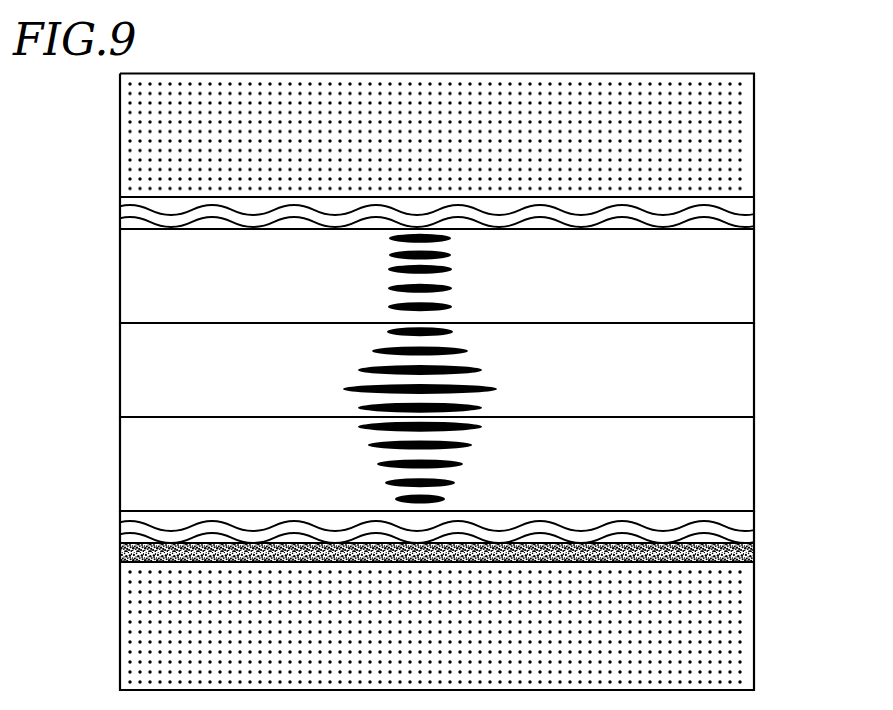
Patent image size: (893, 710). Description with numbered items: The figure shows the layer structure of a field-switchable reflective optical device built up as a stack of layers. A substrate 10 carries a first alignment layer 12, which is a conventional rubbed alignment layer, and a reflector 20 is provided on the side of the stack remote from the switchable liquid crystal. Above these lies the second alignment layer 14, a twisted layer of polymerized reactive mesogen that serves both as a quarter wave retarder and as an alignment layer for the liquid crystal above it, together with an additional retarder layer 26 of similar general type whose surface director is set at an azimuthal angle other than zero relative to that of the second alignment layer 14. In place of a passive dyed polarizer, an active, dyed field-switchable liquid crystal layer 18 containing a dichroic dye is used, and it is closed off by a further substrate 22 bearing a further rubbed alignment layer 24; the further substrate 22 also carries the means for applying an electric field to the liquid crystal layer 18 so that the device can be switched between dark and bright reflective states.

The substrate 10 is at (728, 625).
The first alignment layer 12 is at (737, 529).
The second alignment layer 14 is at (718, 390).
The field-switchable liquid crystal layer 18 is at (707, 293).
The reflector 20 is at (750, 550).
The further substrate 22 is at (730, 173).
The further rubbed alignment layer 24 is at (733, 223).
The additional retarder layer 26 is at (722, 468).